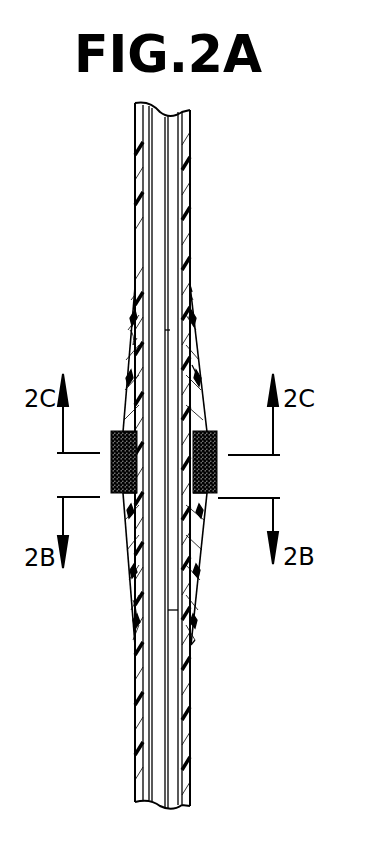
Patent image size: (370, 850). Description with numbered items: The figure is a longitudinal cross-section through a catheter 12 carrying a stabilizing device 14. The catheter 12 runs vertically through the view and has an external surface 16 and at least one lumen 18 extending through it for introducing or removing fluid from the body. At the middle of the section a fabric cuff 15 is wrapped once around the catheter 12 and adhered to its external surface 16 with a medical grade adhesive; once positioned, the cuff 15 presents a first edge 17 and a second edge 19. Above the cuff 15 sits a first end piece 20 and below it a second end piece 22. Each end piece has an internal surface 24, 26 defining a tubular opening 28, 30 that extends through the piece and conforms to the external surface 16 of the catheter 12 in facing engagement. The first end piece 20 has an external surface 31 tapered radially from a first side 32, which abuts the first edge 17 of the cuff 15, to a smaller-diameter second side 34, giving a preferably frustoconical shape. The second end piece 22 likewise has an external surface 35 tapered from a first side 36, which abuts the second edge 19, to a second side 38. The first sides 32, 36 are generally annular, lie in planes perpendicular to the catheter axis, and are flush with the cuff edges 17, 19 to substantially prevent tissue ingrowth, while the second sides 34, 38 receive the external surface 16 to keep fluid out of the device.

The catheter 12 is at (194, 212).
The stabilizing device 14 is at (134, 291).
The cuff 15 is at (218, 470).
The external surface 16 is at (194, 718).
The first edge 17 is at (208, 434).
The lumen 18 is at (166, 196).
The second edge 19 is at (210, 500).
The first end piece 20 is at (124, 382).
The second end piece 22 is at (126, 548).
The internal surface 24 is at (142, 332).
The internal surface 26 is at (140, 616).
The tubular opening 28 is at (170, 330).
The tubular opening 30 is at (178, 610).
The external surface 31 is at (198, 378).
The first side 32 is at (116, 432).
The second side 34 is at (192, 296).
The external surface 35 is at (205, 546).
The first side 36 is at (116, 497).
The second side 38 is at (200, 632).